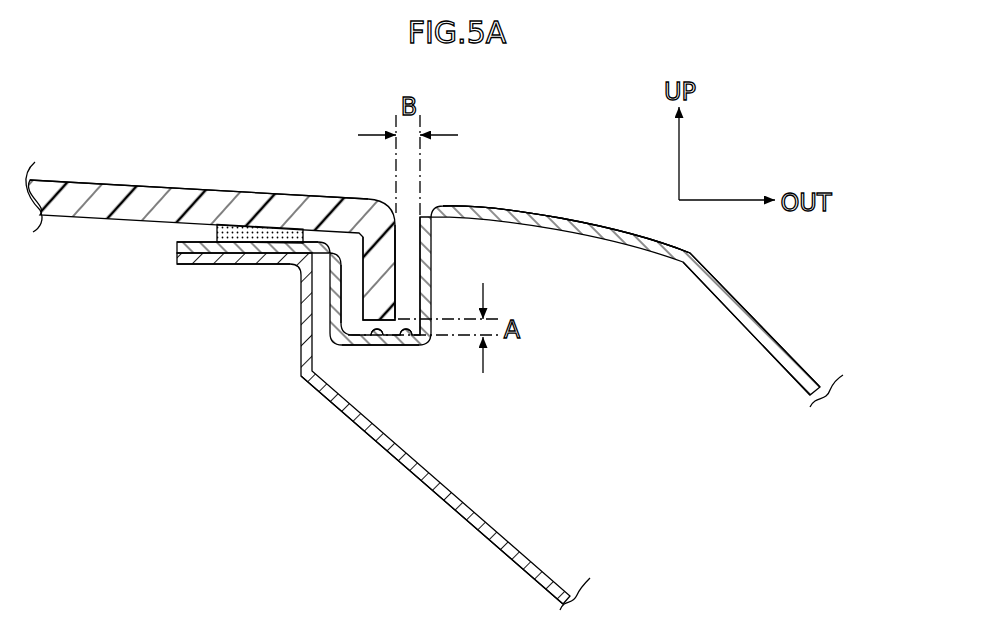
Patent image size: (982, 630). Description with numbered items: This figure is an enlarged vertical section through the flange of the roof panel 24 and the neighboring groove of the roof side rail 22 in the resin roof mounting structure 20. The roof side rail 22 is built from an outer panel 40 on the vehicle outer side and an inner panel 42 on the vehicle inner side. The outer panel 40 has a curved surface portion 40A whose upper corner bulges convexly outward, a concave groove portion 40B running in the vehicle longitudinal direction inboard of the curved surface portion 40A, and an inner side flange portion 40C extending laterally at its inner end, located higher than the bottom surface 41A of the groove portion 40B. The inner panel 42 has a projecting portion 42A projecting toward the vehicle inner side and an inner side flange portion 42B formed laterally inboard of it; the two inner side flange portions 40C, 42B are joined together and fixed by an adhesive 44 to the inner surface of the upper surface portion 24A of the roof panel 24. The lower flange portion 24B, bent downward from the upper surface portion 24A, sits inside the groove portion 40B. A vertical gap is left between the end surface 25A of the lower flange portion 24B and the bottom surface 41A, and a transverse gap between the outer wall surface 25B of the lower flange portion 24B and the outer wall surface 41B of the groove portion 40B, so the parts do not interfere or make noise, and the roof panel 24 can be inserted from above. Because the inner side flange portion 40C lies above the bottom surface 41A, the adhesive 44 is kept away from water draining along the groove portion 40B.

The vehicle roof / body structure 20 is at (558, 188).
The roof side rail 22 is at (770, 304).
The roof panel 24 is at (162, 186).
The upper surface portion 24A is at (87, 195).
The lower flange portion 24B is at (400, 253).
The end surface 25A is at (357, 325).
The wall surface 25B is at (385, 262).
The outer panel 40 is at (630, 225).
The curved surface portion 40A is at (698, 266).
The groove portion 40B is at (376, 346).
The inner side flange portion 40C is at (193, 242).
The bottom surface 41A is at (414, 346).
The wall surface 41B is at (410, 265).
The inner panel 42 is at (460, 520).
The projecting portion 42A is at (407, 458).
The inner side flange portion 42B is at (228, 264).
The adhesive 44 is at (251, 227).